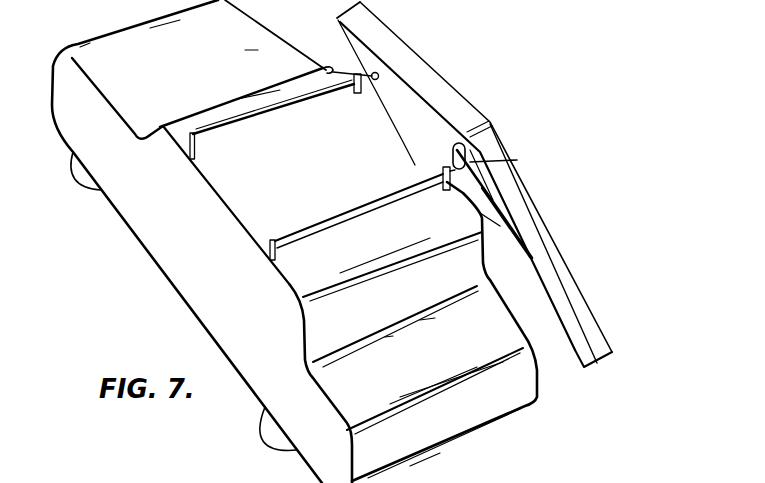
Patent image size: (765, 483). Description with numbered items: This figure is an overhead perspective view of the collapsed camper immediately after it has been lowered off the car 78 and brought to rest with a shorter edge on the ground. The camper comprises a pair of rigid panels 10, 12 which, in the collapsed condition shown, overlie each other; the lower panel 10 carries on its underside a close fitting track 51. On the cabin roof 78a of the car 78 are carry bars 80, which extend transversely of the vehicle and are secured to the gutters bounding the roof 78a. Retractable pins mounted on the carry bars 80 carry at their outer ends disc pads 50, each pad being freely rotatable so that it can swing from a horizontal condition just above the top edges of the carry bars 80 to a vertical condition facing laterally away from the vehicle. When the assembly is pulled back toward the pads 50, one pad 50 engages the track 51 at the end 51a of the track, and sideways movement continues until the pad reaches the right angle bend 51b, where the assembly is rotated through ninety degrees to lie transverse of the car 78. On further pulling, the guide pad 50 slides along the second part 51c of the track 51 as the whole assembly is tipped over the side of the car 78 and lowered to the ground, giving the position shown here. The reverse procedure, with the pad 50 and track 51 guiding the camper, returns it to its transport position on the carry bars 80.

The lower panel 10 is at (577, 352).
The panel 12 is at (597, 318).
The disc pad 50 is at (379, 71).
The track 51 is at (492, 204).
The end of track 51a is at (532, 258).
The right angle bend 51b is at (500, 227).
The second part of track 51c is at (517, 160).
The car 78 is at (162, 240).
The cabin roof 78a is at (342, 177).
The carry bar 80 is at (226, 133).